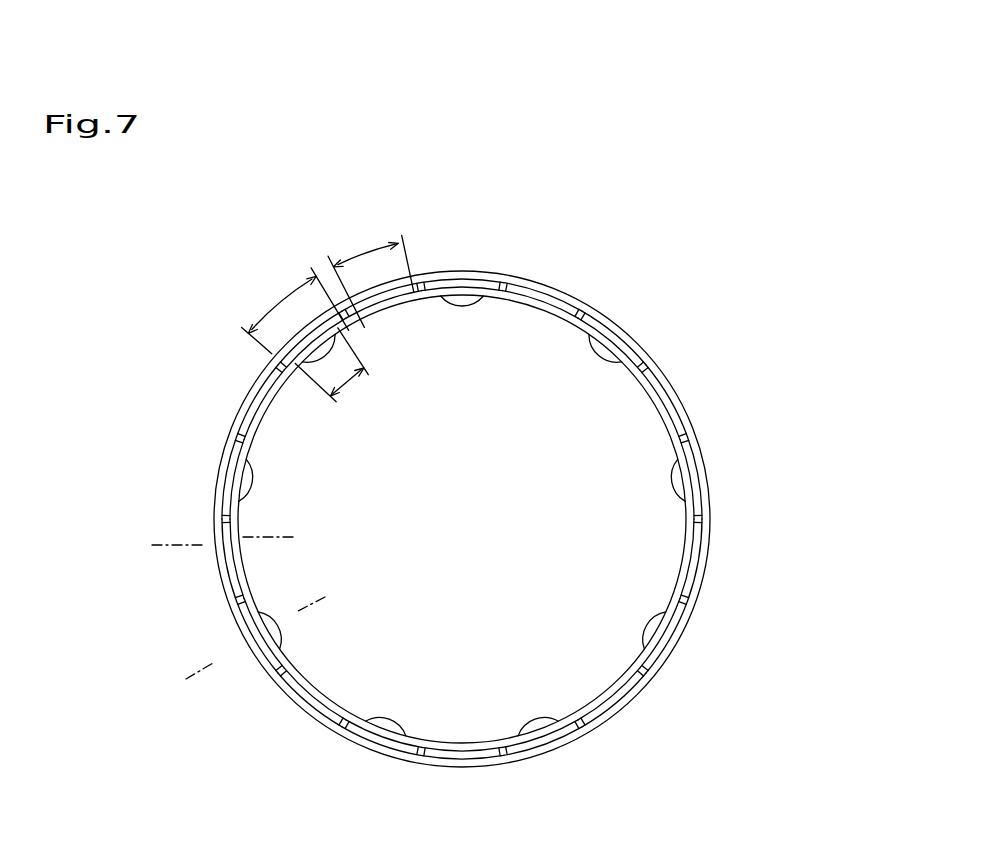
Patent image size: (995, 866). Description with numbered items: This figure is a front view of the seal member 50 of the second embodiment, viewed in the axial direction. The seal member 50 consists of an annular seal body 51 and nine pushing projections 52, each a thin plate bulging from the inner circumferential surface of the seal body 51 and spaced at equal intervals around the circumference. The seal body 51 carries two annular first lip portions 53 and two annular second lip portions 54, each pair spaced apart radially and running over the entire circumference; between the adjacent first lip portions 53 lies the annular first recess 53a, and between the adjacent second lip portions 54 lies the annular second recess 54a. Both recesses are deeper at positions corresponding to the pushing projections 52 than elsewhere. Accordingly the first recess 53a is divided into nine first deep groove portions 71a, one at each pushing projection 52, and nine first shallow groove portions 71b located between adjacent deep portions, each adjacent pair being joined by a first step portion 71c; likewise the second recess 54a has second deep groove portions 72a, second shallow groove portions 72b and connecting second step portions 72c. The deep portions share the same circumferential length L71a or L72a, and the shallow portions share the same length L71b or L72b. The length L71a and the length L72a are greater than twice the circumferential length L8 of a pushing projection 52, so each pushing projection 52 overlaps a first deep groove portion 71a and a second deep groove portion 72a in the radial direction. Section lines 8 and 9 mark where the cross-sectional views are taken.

The seal member 50 is at (181, 257).
The seal body 51 is at (612, 321).
The pushing projection 52 is at (484, 300).
The first lip portion 53 is at (477, 504).
The second lip portion 54 is at (477, 504).
The first recess 53a is at (541, 519).
The second recess 54a is at (696, 465).
The first deep groove portion 71a is at (471, 496).
The first shallow groove portion 71b is at (477, 521).
The first step portion 71c is at (484, 519).
The second deep groove portion 72a is at (463, 271).
The second shallow groove portion 72b is at (704, 564).
The second step portion 72c is at (705, 520).
The length of first deep groove portion L71a is at (292, 287).
The length of first shallow groove portion L71b is at (371, 252).
The length of second deep groove portion L72a is at (266, 312).
The length of second shallow groove portion L72b is at (365, 253).
The length of pushing projection L8 is at (350, 393).
The section line VIII 8 is at (152, 545).
The section line IX 9 is at (325, 597).